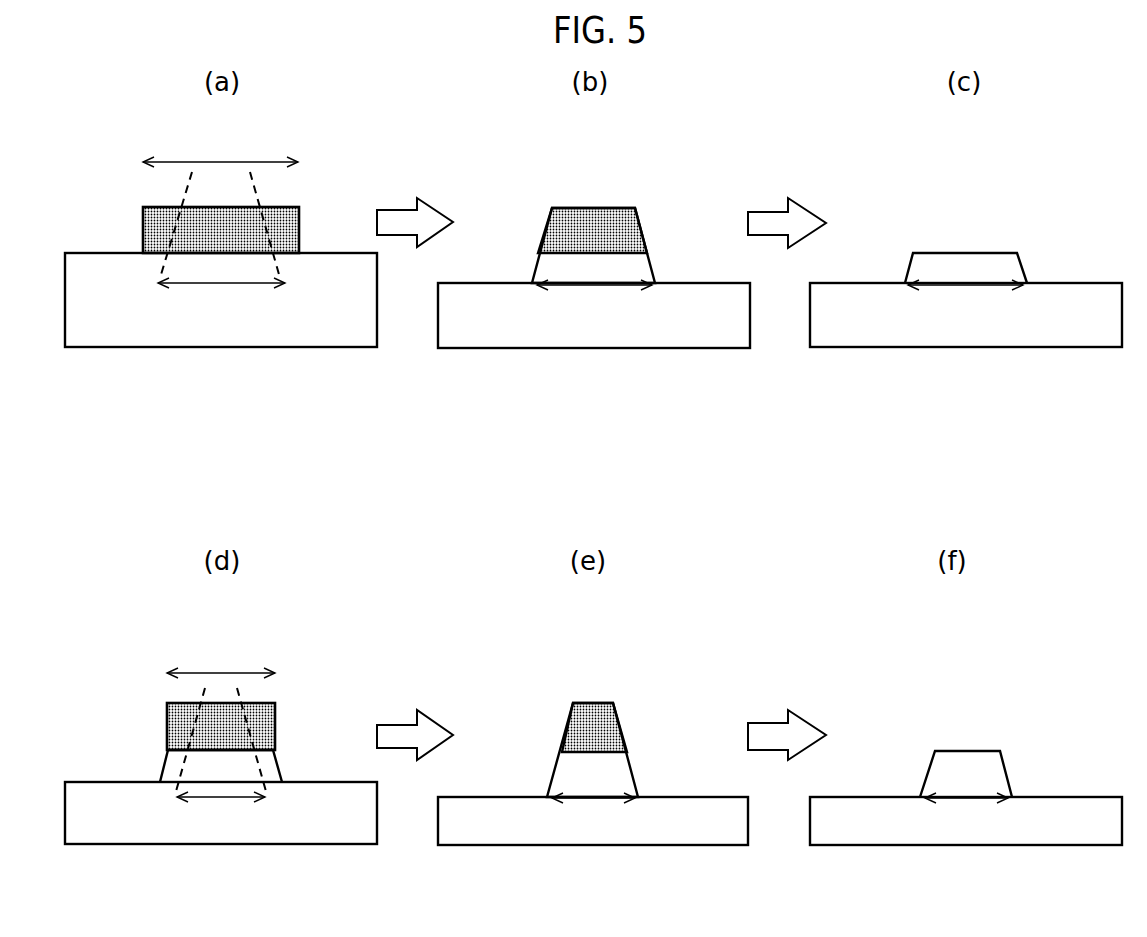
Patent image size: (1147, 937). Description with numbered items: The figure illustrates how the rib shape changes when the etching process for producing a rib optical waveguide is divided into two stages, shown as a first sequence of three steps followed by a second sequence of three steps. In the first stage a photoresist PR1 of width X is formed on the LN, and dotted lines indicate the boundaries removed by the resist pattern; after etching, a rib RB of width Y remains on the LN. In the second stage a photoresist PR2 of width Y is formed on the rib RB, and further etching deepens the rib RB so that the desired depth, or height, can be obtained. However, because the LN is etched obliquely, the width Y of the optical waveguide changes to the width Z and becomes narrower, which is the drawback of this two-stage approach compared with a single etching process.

The photoresist PR1 is at (158, 226).
The photoresist PR2 is at (257, 727).
The rib RB is at (657, 270).
The element LN is at (112, 315).
The width X is at (220, 144).
The width Y is at (590, 478).
The width Z is at (592, 818).